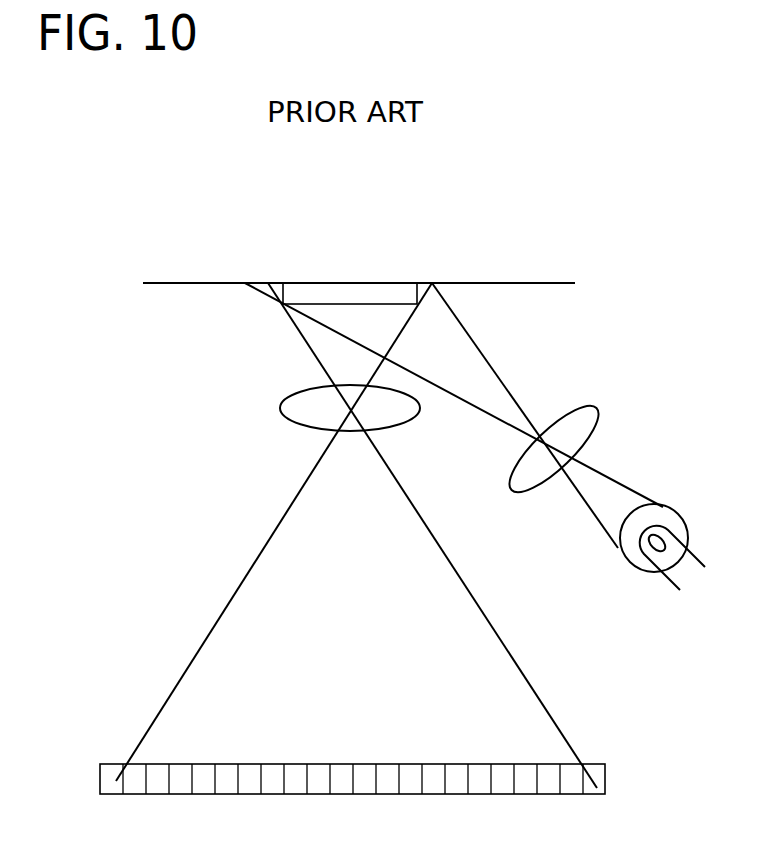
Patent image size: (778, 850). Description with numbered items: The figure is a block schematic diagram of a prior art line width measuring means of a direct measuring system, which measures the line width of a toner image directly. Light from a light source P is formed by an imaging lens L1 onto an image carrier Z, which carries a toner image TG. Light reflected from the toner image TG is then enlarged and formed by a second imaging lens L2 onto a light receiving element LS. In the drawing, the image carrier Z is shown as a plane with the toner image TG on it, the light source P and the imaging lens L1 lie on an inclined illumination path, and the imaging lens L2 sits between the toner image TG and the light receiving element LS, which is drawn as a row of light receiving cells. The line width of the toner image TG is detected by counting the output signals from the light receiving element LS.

The toner image TG is at (393, 292).
The image carrier Z is at (553, 283).
The imaging lens L1 is at (597, 406).
The imaging lens L2 is at (410, 424).
The light source P is at (675, 513).
The light receiving element LS is at (606, 780).